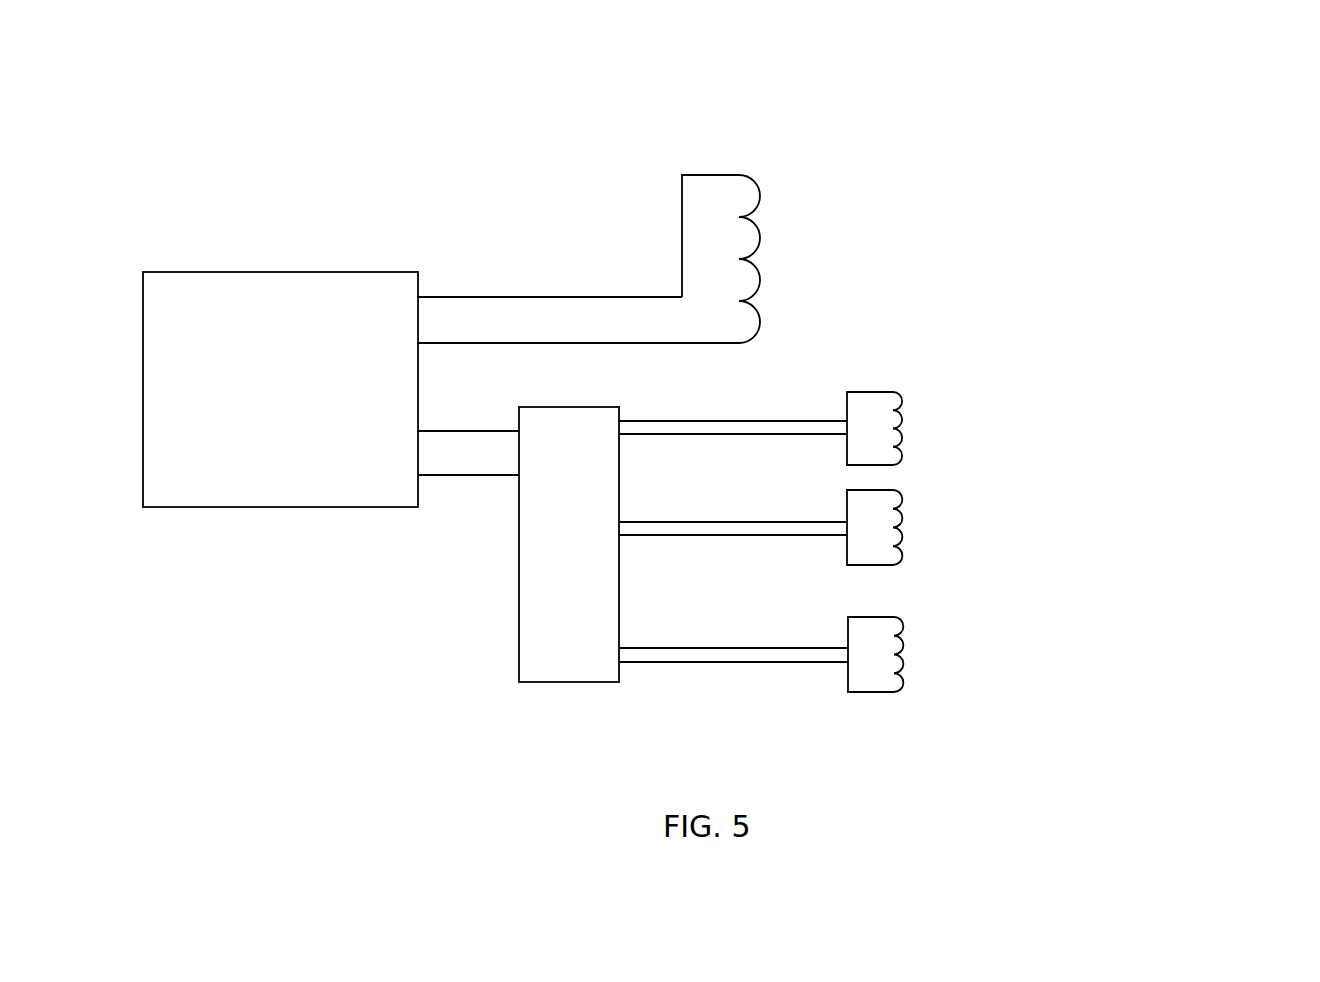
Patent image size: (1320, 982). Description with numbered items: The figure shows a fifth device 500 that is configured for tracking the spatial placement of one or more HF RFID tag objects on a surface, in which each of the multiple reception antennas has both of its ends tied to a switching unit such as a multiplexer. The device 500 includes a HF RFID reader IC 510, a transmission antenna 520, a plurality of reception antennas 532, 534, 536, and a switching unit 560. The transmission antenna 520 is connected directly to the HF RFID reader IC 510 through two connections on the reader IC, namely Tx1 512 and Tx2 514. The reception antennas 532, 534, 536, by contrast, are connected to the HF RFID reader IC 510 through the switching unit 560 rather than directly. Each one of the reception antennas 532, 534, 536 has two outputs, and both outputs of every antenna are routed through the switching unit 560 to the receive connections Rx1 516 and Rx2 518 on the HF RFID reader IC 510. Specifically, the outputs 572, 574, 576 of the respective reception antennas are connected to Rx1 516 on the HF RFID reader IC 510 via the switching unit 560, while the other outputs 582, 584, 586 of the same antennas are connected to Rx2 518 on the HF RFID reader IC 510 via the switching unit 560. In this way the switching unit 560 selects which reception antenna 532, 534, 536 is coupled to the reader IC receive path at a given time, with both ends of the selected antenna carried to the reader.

The fifth device 500 is at (175, 66).
The HF RFID reader IC 510 is at (280, 389).
The Tx1 connection 512 is at (502, 294).
The Tx2 connection 514 is at (531, 342).
The Rx1 connection 516 is at (421, 425).
The Rx2 connection 518 is at (421, 470).
The transmission antenna 520 is at (758, 233).
The reception antenna 532 is at (903, 420).
The reception antenna 534 is at (903, 520).
The reception antenna 536 is at (904, 647).
The switching unit 560 is at (569, 544).
The output 572 is at (706, 421).
The output 574 is at (662, 522).
The output 576 is at (707, 648).
The output 582 is at (709, 436).
The output 584 is at (665, 537).
The output 586 is at (709, 665).